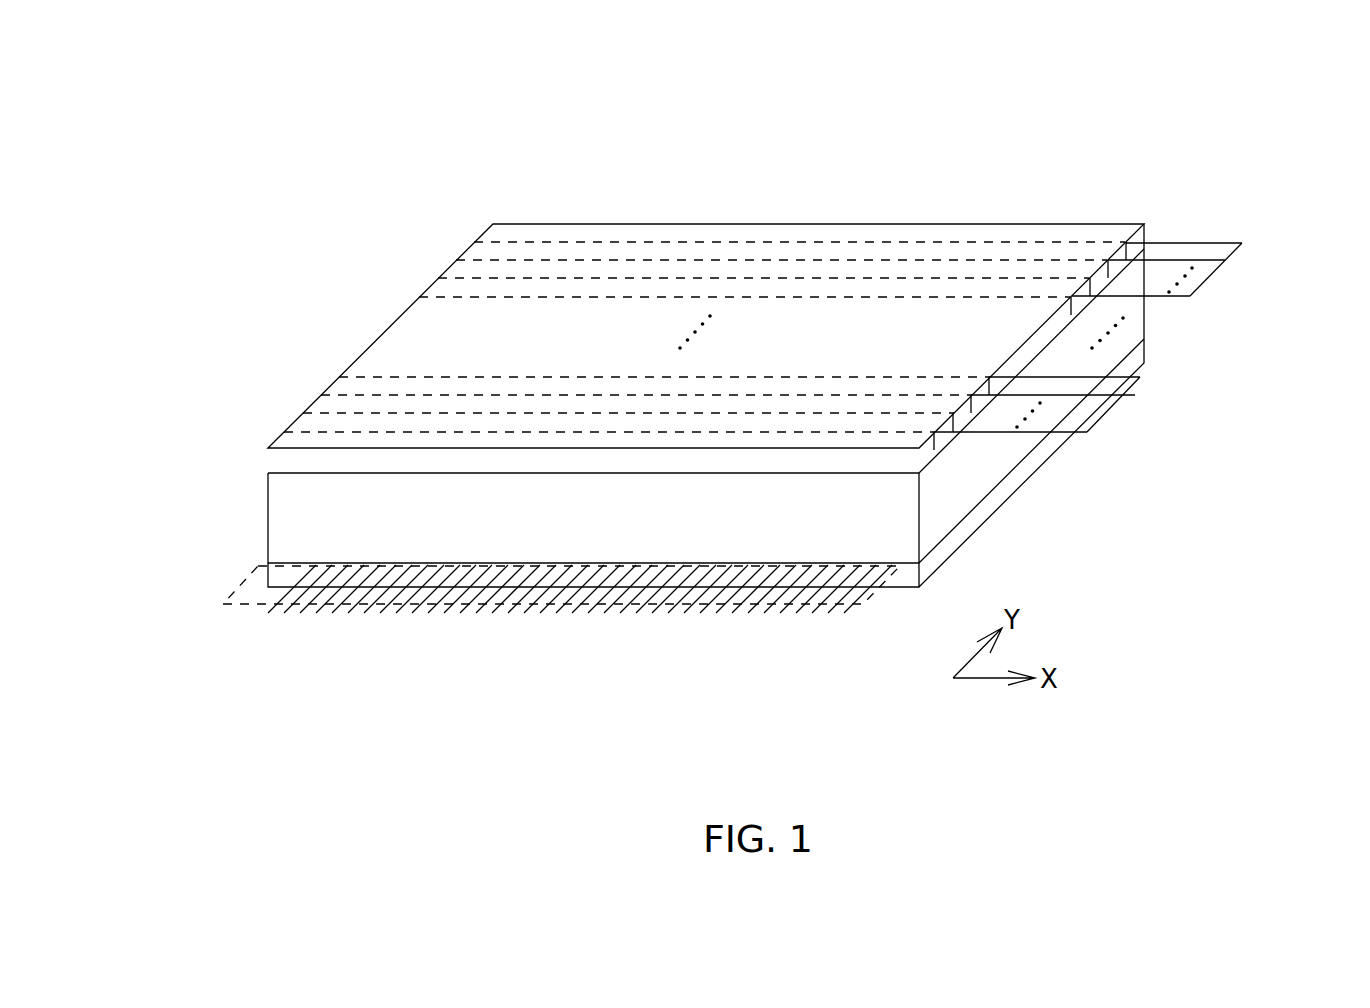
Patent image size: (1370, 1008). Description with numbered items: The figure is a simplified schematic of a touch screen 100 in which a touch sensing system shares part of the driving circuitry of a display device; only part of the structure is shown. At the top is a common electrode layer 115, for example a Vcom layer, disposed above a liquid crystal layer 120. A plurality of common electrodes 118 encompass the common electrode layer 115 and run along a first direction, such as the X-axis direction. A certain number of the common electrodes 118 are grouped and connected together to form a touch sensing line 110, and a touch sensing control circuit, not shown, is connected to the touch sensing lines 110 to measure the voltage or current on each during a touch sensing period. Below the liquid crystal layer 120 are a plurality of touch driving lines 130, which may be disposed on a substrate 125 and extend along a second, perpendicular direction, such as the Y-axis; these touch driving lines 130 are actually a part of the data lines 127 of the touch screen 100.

The touch screen 100 is at (1160, 140).
The touch sensing line 110 is at (1218, 269).
The common electrode layer 115 is at (415, 340).
The common electrodes 118 is at (632, 242).
The liquid crystal layer 120 is at (525, 535).
The substrate 125 is at (957, 536).
The data lines 127 is at (244, 583).
The touch driving lines 130 is at (258, 625).